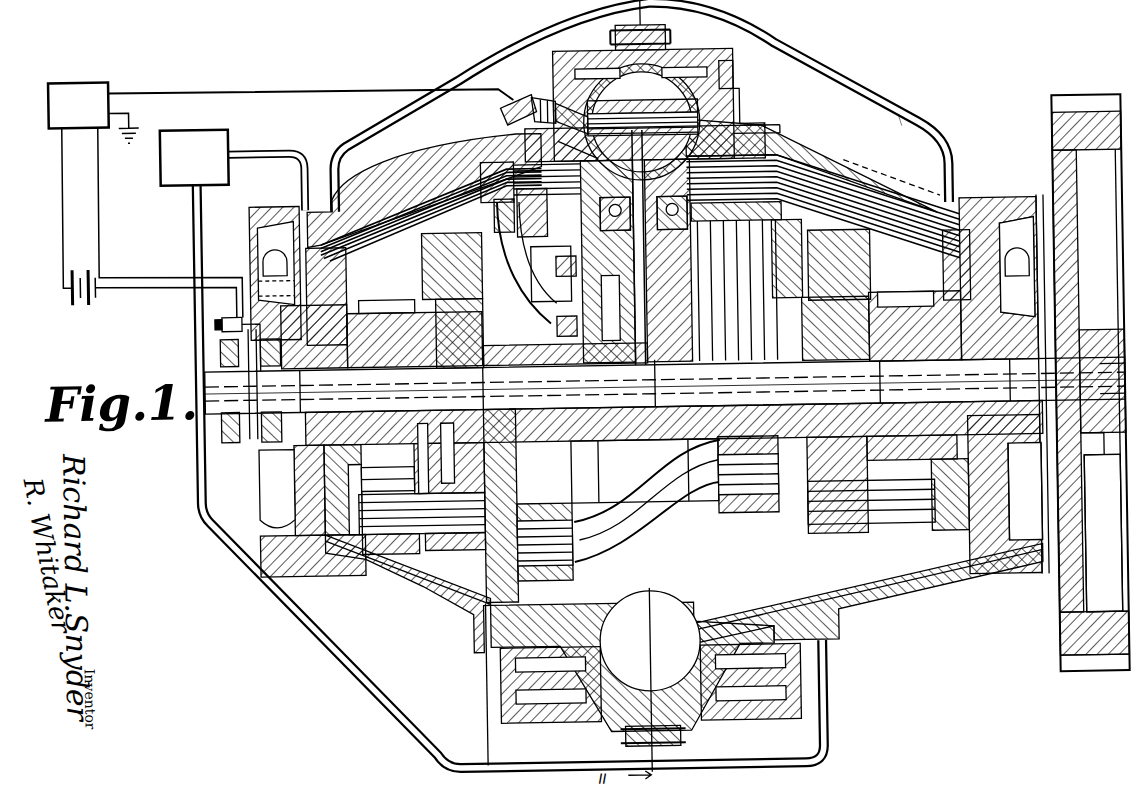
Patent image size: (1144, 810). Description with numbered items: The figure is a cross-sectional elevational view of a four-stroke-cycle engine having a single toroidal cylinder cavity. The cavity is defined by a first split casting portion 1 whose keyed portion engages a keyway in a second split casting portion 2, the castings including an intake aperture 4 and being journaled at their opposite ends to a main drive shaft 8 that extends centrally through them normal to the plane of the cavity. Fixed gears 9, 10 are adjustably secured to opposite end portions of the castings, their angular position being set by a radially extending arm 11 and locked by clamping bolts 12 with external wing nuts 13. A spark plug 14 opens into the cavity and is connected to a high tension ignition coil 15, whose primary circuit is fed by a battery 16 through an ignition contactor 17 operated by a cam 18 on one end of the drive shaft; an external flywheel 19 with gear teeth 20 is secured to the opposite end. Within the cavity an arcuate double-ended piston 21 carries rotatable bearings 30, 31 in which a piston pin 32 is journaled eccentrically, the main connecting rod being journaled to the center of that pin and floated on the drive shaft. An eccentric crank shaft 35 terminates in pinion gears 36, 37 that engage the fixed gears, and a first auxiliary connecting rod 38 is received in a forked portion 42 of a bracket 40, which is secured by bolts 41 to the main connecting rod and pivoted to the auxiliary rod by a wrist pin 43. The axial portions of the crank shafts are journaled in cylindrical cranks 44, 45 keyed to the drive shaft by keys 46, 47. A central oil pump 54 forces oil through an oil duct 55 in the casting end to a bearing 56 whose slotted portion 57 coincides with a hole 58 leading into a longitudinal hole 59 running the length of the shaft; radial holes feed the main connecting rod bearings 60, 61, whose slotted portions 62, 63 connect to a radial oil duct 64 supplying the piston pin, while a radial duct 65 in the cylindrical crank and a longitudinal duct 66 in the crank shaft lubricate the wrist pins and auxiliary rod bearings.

The first split casting portion 1 is at (600, 68).
The second split casting portion 2 is at (714, 62).
The intake aperture 4 is at (586, 660).
The main drive shaft 8 is at (1090, 335).
The fixed gear 9 is at (396, 300).
The fixed gear 10 is at (900, 304).
The radially extending arm 11 is at (895, 108).
The clamping bolt 12 is at (424, 250).
The external wing nut 13 is at (272, 233).
The spark plug 14 is at (528, 92).
The high tension ignition coil 15 is at (100, 77).
The battery 16 is at (88, 294).
The ignition contactor 17 is at (232, 311).
The cam 18 is at (221, 343).
The external flywheel 19 is at (1106, 440).
The gear teeth 20 is at (1098, 668).
The piston 21 is at (738, 72).
The rotatable bearing 30 is at (741, 95).
The rotatable bearing 31 is at (547, 129).
The piston pin 32 is at (744, 117).
The second eccentric crank shaft 35 is at (828, 528).
The pinion gear 36 is at (900, 548).
The pinion gear 37 is at (460, 532).
The first auxiliary connecting rod 38 is at (518, 262).
The bracket 40 is at (535, 285).
The bolt 41 is at (552, 300).
The forked portion 42 is at (500, 200).
The wrist pin 43 is at (431, 220).
The cylindrical crank 44 is at (431, 210).
The cylindrical crank 45 is at (846, 240).
The key 46 is at (556, 325).
The key 47 is at (806, 306).
The central oil pump 54 is at (226, 117).
The oil duct 55 is at (290, 209).
The bearing 56 is at (262, 455).
The slotted portion 57 is at (271, 438).
The hole 58 is at (665, 380).
The longitudinal hole 59 is at (728, 360).
The main connecting rod bearing 60 is at (510, 430).
The main connecting rod bearing 61 is at (686, 440).
The slotted portion 62 is at (632, 425).
The slotted portion 63 is at (635, 247).
The radial oil duct 64 is at (713, 260).
The radial duct 65 is at (528, 504).
The longitudinal duct 66 is at (588, 519).